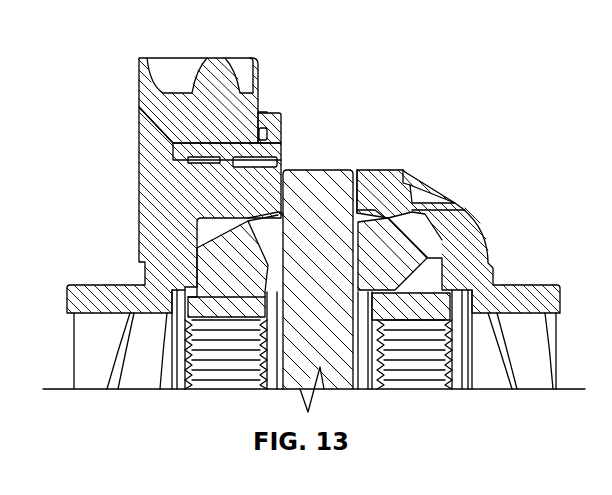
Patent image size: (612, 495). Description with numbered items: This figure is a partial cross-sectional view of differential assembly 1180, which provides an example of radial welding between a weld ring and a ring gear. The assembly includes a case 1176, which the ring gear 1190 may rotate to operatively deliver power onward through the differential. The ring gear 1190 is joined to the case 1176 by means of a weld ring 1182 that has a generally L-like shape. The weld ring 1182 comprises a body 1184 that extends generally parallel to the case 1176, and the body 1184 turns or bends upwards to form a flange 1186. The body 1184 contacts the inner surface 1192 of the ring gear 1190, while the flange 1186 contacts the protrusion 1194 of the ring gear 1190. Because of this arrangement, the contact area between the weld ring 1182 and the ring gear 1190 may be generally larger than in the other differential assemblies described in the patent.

The differential assembly 1180 is at (314, 222).
The case 1176 is at (477, 247).
The ring gear 1190 is at (151, 105).
The inner surface 1192 is at (210, 123).
The protrusion 1194 is at (270, 107).
The flange 1186 is at (282, 128).
The body 1184 is at (283, 145).
The weld ring 1182 is at (182, 150).